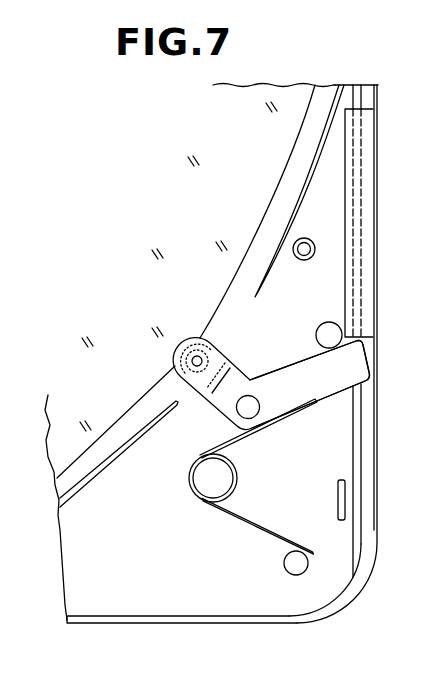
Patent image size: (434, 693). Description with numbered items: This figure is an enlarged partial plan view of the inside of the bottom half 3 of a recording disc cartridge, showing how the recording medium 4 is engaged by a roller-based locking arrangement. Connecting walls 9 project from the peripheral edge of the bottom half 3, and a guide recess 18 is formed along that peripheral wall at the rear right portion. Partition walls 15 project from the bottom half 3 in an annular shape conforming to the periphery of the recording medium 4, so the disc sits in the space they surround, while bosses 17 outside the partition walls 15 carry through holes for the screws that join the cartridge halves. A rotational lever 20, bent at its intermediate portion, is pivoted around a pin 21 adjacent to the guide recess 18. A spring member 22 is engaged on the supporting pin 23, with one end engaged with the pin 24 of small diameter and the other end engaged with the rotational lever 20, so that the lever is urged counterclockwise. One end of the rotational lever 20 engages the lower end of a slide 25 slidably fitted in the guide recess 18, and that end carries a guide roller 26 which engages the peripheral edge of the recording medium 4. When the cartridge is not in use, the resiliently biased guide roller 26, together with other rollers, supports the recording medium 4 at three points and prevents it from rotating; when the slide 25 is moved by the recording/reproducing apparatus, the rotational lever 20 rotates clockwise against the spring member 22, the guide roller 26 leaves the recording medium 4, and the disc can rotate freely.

The bottom half 3 is at (378, 499).
The recording medium 4 is at (279, 96).
The connecting wall 9 is at (170, 620).
The partition wall 15 is at (325, 166).
The boss 17 is at (316, 249).
The guide recess 18 is at (353, 453).
The rotational lever 20 is at (285, 369).
The pin 21 is at (248, 395).
The spring member 22 is at (262, 520).
The supporting pin 23 is at (207, 487).
The pin of a small diameter 24 is at (284, 562).
The slide 25 is at (372, 211).
The guide roller 26 is at (194, 338).